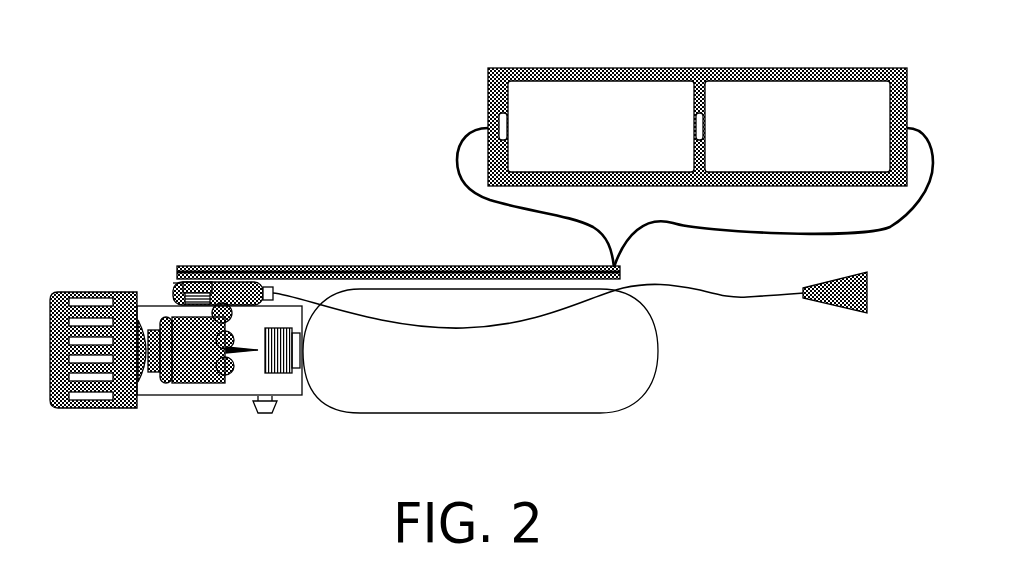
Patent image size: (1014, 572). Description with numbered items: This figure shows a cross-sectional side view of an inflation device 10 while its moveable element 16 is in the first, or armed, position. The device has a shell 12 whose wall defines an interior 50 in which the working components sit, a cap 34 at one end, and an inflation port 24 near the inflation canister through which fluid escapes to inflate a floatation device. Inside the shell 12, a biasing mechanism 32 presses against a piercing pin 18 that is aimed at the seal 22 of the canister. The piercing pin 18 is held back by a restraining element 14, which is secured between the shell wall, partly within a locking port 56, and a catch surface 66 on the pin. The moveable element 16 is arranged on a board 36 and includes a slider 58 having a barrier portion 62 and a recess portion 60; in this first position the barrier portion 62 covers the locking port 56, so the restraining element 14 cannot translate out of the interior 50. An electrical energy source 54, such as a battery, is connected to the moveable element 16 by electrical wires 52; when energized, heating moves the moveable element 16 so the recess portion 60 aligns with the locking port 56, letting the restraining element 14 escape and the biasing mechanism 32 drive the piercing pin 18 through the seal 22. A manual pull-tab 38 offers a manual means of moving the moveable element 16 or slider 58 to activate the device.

The inflation device 10 is at (323, 146).
The shell 12 is at (177, 396).
The restraining element 14 is at (222, 318).
The moveable element 16 is at (367, 266).
The piercing pin 18 is at (207, 384).
The seal 22 is at (264, 371).
The inflation port 24 is at (266, 425).
The biasing mechanism 32 is at (163, 318).
The cap 34 is at (60, 302).
The board 36 is at (450, 267).
The manual pull-tab 38 is at (703, 290).
The interior 50 is at (243, 340).
The electrical wires 52 is at (458, 153).
The electrical energy source 54 is at (607, 98).
The locking port 56 is at (178, 283).
The slider 58 is at (231, 287).
The recess portion 60 is at (249, 302).
The barrier portion 62 is at (200, 281).
The catch surface 66 is at (218, 322).